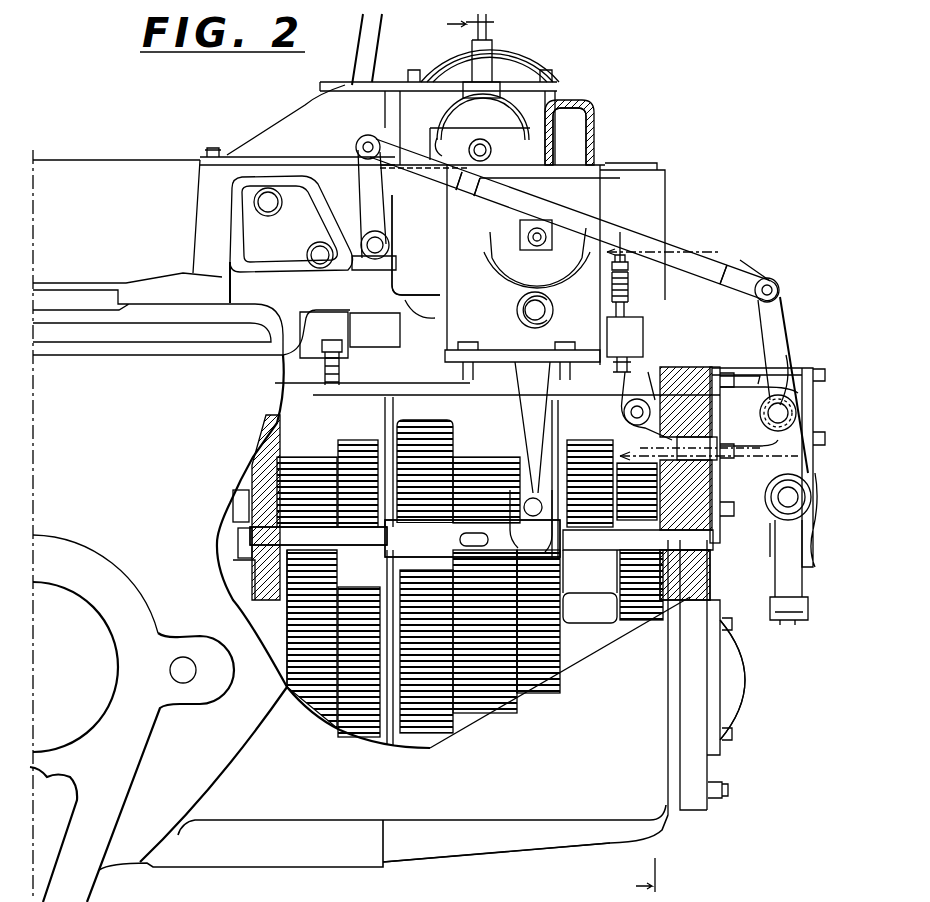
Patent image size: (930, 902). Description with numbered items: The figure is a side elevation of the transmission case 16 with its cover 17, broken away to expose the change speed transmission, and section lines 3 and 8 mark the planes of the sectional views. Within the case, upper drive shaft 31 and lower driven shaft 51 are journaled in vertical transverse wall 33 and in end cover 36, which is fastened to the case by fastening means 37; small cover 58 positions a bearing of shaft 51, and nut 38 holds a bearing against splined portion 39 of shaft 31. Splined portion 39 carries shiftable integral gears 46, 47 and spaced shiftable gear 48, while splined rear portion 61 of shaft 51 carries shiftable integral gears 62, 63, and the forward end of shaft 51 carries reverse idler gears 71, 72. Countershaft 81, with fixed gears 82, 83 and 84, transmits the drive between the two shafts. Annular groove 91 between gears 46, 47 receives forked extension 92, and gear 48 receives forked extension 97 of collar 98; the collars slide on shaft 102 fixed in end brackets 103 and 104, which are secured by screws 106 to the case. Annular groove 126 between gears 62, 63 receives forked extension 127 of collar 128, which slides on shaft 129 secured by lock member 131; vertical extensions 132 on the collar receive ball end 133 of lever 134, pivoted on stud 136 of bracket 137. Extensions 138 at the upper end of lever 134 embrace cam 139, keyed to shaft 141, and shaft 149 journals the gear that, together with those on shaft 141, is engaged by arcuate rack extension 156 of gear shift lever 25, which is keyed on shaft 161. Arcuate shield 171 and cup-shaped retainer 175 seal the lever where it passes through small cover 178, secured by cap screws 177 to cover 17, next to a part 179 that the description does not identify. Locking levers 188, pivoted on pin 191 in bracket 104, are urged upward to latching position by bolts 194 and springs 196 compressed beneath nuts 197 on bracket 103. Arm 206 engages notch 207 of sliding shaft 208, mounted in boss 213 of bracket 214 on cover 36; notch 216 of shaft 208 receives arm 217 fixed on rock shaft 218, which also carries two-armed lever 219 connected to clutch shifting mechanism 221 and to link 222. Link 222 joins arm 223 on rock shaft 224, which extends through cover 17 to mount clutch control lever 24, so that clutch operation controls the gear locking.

The section line 3- 3 is at (702, 359).
The section line 8- 8 is at (561, 457).
The transmission case 16 is at (597, 838).
The cover 17 is at (666, 188).
The flywheel clutch control lever 24 is at (358, 52).
The gear shift lever 25 is at (475, 36).
The upper transmission drive shaft 31 is at (500, 482).
The vertical transverse wall 33 is at (262, 566).
The end cover 36 is at (706, 556).
The fastening means 37 is at (728, 790).
The nut 38 is at (235, 514).
The splined portion 39 is at (305, 480).
The shiftable integral gear 46 is at (350, 452).
The shiftable integral gear 47 is at (440, 430).
The shiftable gear 48 is at (595, 450).
The lower transmission driven shaft 51 is at (508, 690).
The small cover 58 is at (745, 678).
The splined rear portion 61 is at (474, 708).
The integral gear 62 is at (362, 732).
The integral gear 63 is at (425, 736).
The reverse idler gear 71 is at (545, 660).
The reverse idler gear 72 is at (632, 614).
The countershaft 81 is at (605, 600).
The non-shiftable gear 82 is at (325, 590).
The non-shiftable gear 83 is at (478, 598).
The non-shiftable gear 84 is at (648, 600).
The annular groove 91 is at (388, 450).
The forked arcuately shaped extension 92 is at (388, 410).
The forked arcuately shaped extension 97 is at (560, 408).
The shiftable collar 98 is at (420, 303).
The shaft 102 is at (390, 318).
The end bracket 103 is at (645, 327).
The end bracket 104 is at (318, 350).
The screws 106 is at (635, 350).
The annular groove 126 is at (388, 738).
The forked extension 127 is at (330, 612).
The collar 128 is at (385, 542).
The shaft 129 is at (262, 545).
The lock member 131 is at (728, 508).
The spaced vertical extensions 132 is at (533, 523).
The ball end 133 is at (530, 515).
The lever 134 is at (522, 402).
The stud 136 is at (520, 315).
The bracket 137 is at (485, 309).
The extensions 138 is at (497, 240).
The cam 139 is at (505, 210).
The shaft 141 is at (532, 250).
The shaft 149 is at (592, 196).
The arcuate rack extension 156 is at (583, 133).
The shaft 161 is at (486, 145).
The arcuate shield 171 is at (435, 131).
The cup-shaped retainer 175 is at (490, 88).
The cap screws 177 is at (214, 148).
The small cover 178 is at (603, 115).
The quadrant 179 is at (432, 66).
The lever 188 is at (350, 396).
The pin 191 is at (300, 397).
The bolt 194 is at (620, 238).
The spring 196 is at (630, 298).
The nut 197 is at (630, 270).
The arm 206 is at (648, 440).
The notch 207 is at (700, 448).
The shaft 208 is at (714, 440).
The boss 213 is at (722, 432).
The bracket 214 is at (752, 378).
The notch 216 is at (766, 487).
The arm 217 is at (768, 420).
The rock shaft 218 is at (787, 360).
The two-armed lever 219 is at (775, 320).
The clutch shifting mechanism 221 is at (784, 572).
The link 222 is at (655, 242).
The arm 223 is at (360, 178).
The rock shaft 224 is at (370, 232).